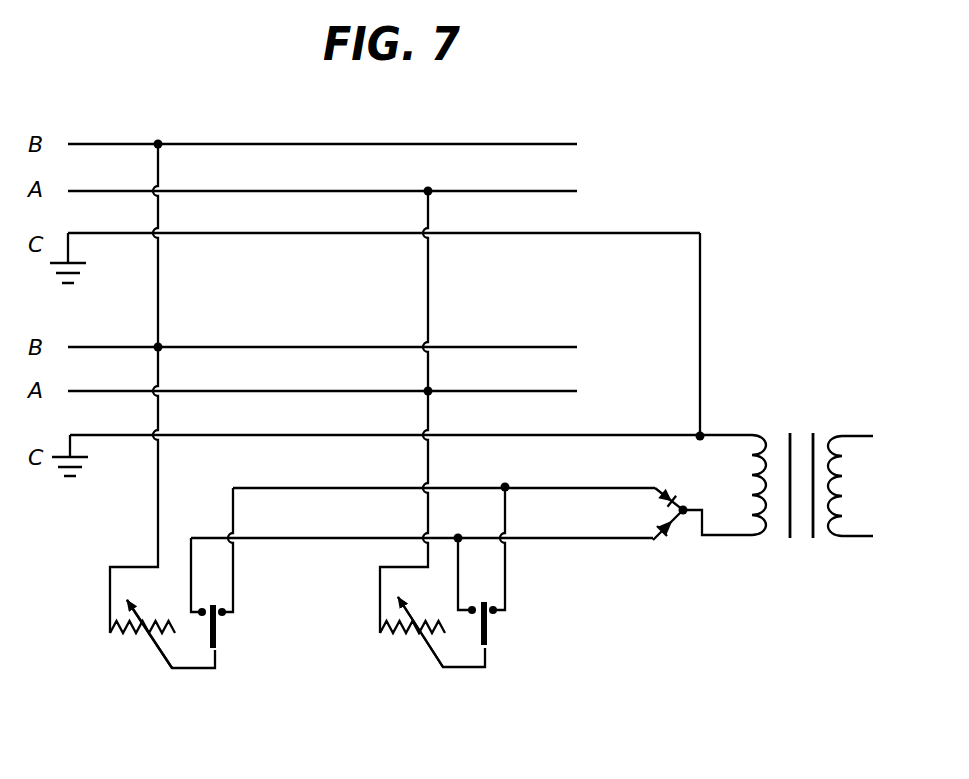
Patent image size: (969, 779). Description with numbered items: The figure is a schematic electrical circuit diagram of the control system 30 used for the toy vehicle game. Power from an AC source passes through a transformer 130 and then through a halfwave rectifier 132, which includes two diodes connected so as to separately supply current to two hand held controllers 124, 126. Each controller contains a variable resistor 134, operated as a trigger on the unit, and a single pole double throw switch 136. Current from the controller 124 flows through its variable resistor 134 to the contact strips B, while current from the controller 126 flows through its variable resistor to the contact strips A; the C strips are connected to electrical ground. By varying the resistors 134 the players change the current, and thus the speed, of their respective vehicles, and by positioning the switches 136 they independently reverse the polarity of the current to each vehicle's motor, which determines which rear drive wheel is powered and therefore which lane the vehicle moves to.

The control system 30 is at (612, 665).
The controller 124 is at (173, 710).
The controller 126 is at (437, 740).
The transformer 130 is at (787, 552).
The halfwave rectifier 132 is at (662, 552).
The variable resistor 134 is at (100, 615).
The single pole double throw switch 136 is at (230, 622).